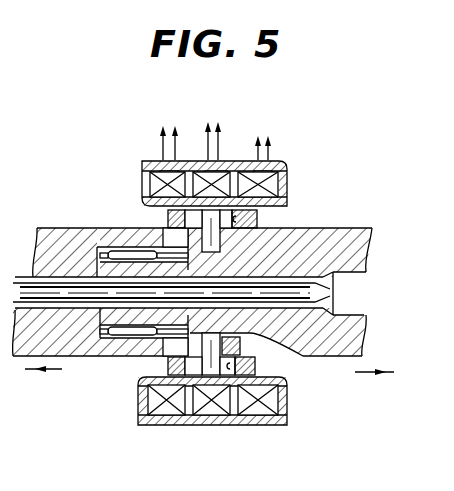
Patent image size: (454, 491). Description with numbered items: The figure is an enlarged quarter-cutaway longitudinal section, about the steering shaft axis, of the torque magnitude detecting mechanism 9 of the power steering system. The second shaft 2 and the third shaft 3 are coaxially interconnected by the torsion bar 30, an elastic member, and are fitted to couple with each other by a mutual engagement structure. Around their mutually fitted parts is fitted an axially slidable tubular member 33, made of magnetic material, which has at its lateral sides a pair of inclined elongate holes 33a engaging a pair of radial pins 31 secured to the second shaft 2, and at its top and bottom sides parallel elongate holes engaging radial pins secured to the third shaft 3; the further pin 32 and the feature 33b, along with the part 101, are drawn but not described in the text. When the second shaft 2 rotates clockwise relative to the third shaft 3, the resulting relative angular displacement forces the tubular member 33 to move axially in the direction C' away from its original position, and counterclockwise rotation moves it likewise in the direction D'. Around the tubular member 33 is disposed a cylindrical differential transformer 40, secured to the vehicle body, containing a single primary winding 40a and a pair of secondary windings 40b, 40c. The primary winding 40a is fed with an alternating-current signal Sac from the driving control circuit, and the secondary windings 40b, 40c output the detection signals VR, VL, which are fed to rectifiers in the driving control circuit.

The second shaft 2 is at (340, 233).
The third shaft 3 is at (65, 233).
The torque magnitude detecting mechanism 9 is at (322, 164).
The torsion bar 30 is at (315, 290).
The radial pins 31 is at (214, 241).
The lower plunger 32 is at (167, 354).
The tubular member 33 is at (168, 218).
The inclined elongate holes 33a is at (262, 220).
The lower bearing ring 33b is at (257, 365).
The differential transformer 40 is at (221, 284).
The primary winding 40a is at (228, 166).
The secondary winding 40b is at (152, 185).
The secondary winding 40c is at (272, 188).
The pin member 101 is at (97, 178).
The detection signal VR is at (164, 152).
The alternating-current signal Sac is at (217, 129).
The detection signal VL is at (268, 151).
The direction C' is at (43, 384).
The direction D' is at (387, 377).